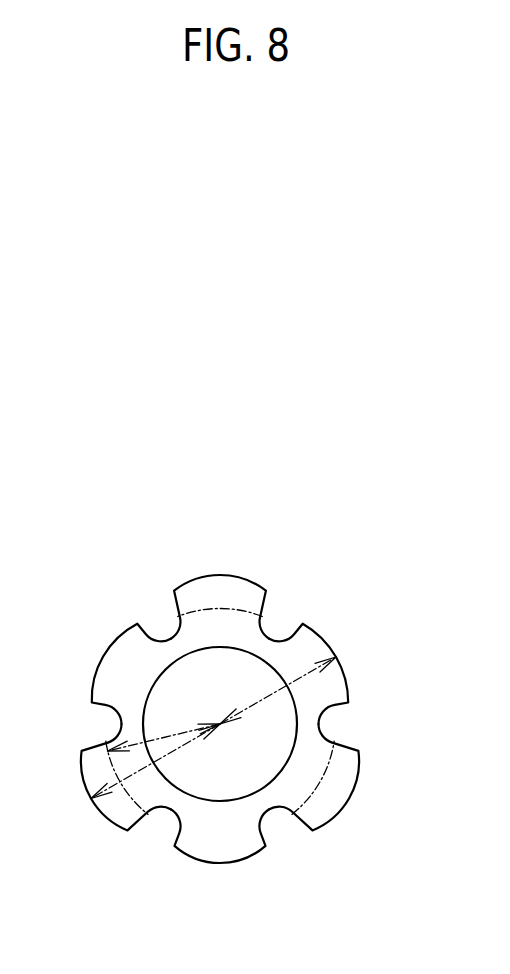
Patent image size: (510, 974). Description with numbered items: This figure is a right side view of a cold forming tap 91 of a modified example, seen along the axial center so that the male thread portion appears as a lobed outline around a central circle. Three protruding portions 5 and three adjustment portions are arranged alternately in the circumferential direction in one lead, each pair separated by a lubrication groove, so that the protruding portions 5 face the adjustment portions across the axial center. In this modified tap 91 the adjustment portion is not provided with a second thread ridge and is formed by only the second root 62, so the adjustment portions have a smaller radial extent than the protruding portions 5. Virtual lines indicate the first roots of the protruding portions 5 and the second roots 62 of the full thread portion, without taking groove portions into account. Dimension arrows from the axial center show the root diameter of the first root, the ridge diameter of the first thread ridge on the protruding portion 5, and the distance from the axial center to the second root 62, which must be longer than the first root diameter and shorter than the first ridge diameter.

The protruding portion 5 is at (225, 573).
The second root 62 is at (94, 664).
The cold forming tap 91 is at (217, 719).